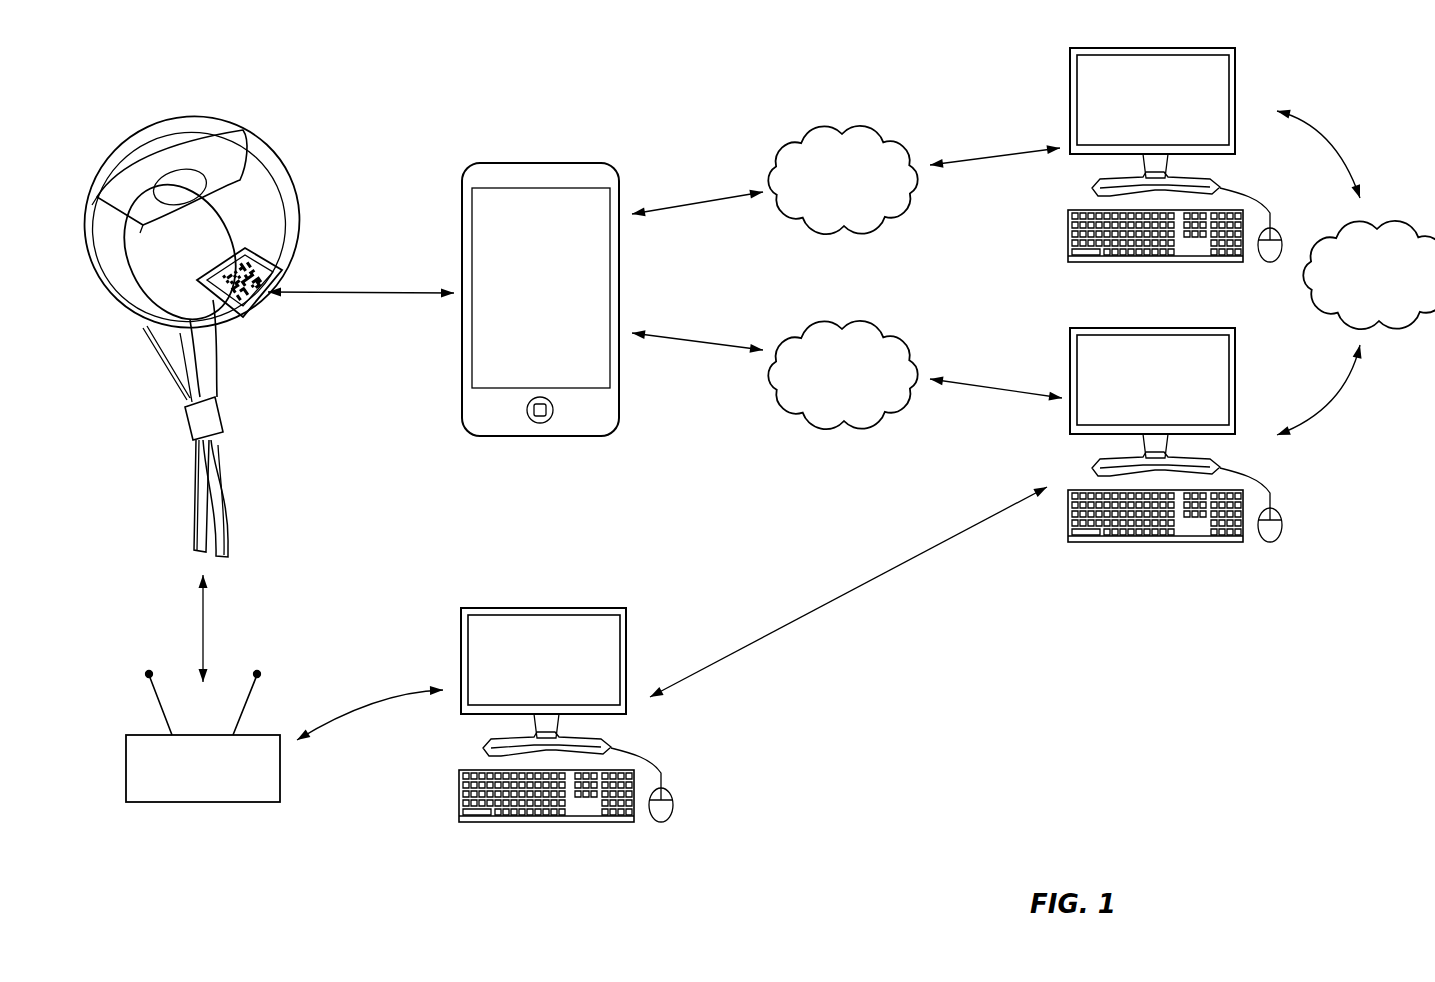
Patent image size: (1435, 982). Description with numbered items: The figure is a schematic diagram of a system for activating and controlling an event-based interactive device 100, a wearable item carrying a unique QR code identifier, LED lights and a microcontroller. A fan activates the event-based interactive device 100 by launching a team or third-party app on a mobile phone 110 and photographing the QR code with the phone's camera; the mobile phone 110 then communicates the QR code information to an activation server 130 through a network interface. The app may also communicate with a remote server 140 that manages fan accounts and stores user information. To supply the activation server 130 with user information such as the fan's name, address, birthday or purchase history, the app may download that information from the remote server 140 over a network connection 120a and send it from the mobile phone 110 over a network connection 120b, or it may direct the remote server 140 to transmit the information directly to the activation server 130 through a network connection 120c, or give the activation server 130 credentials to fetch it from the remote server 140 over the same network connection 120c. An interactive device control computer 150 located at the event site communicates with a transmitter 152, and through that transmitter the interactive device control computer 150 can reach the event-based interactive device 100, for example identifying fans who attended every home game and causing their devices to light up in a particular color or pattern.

The event-based interactive device 100 is at (266, 112).
The mobile phone 110 is at (520, 457).
The network connection 120a is at (842, 180).
The network connection 120b is at (842, 375).
The network connection 120c is at (1369, 275).
The activation server 130 is at (1147, 343).
The remote server 140 is at (1147, 63).
The interactive device control computer 150 is at (570, 632).
The transmitter 152 is at (185, 788).